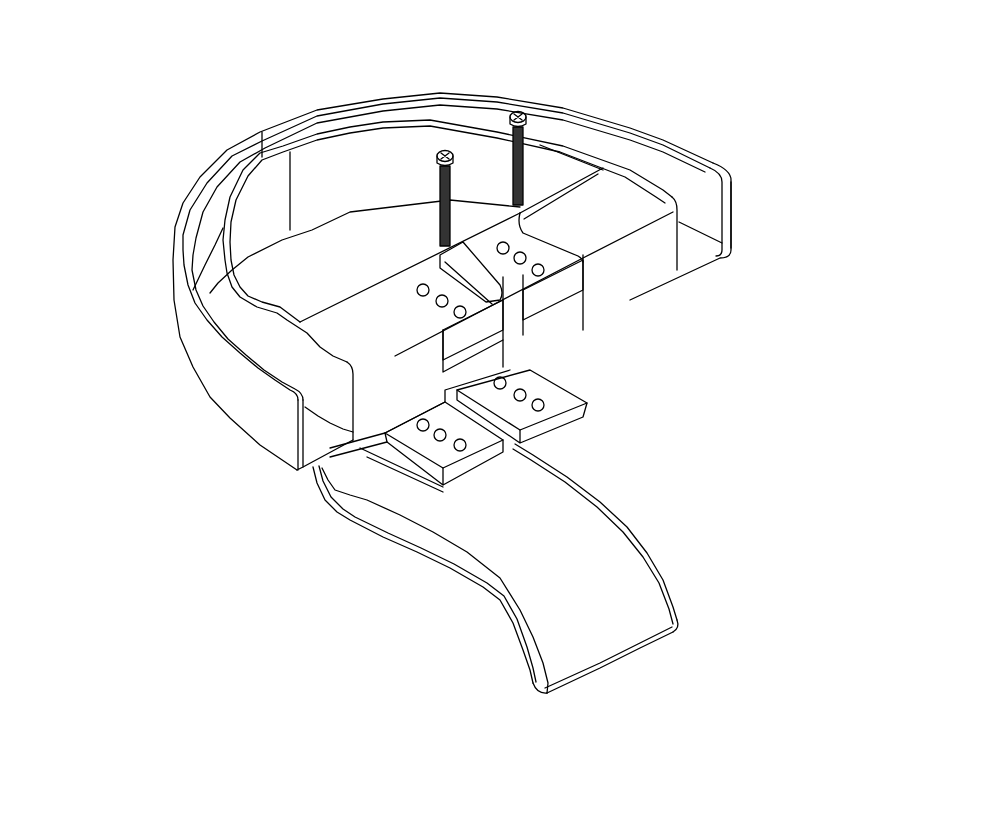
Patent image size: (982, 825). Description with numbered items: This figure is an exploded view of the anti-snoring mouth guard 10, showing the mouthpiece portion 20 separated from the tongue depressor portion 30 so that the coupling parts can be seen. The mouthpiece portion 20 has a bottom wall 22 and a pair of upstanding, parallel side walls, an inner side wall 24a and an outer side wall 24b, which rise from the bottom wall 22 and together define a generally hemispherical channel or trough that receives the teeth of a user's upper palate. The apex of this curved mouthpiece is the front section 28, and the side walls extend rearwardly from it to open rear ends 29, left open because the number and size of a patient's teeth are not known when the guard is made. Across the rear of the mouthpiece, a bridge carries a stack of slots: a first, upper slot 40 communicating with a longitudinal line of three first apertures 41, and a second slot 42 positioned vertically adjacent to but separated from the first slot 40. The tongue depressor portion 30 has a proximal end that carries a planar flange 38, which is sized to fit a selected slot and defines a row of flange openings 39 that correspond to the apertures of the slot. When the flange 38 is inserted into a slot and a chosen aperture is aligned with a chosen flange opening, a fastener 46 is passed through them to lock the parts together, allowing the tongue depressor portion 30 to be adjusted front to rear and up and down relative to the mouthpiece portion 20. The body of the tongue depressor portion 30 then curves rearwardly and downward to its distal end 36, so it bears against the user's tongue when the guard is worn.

The anti-snoring mouth guard 10 is at (145, 106).
The mouthpiece portion 20 is at (504, 83).
The bottom wall 22 is at (322, 447).
The inner side wall 24a is at (247, 310).
The outer side wall 24b is at (692, 178).
The front section 28 is at (240, 138).
The rear ends 29 is at (735, 232).
The tongue depressor portion 30 is at (690, 560).
The distal end 36 is at (620, 662).
The flange 38 is at (555, 373).
The flange openings 39 is at (541, 403).
The first slot 40 is at (560, 268).
The first apertures 41 is at (527, 257).
The second slot 42 is at (445, 370).
The fastener 46 is at (440, 190).